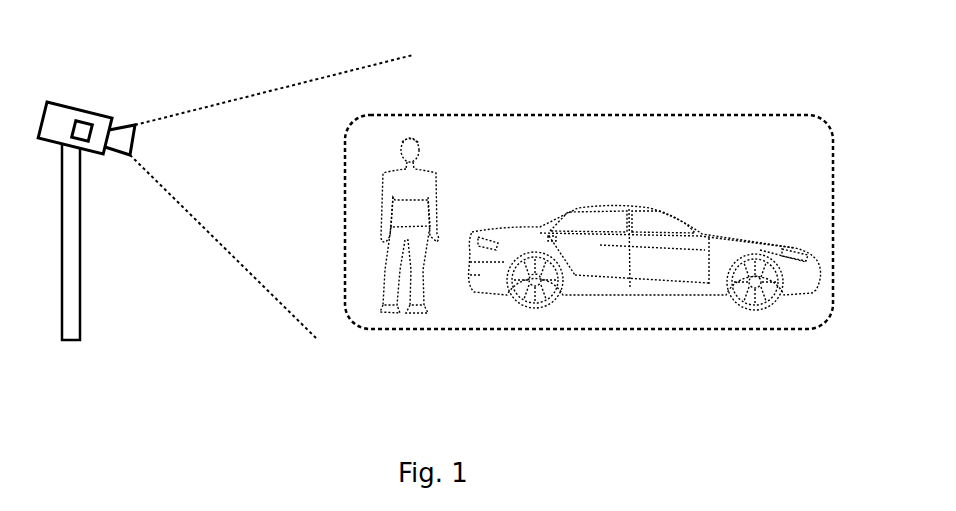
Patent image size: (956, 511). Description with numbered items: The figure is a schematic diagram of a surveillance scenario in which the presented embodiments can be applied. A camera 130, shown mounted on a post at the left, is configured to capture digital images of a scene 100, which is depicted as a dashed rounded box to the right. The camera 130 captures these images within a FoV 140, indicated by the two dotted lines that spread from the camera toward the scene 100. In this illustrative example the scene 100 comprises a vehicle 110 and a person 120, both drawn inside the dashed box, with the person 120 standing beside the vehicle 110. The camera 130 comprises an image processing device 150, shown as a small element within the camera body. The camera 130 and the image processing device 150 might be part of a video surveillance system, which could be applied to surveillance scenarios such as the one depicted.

The scene 100 is at (588, 116).
The vehicle 110 is at (633, 286).
The person 120 is at (419, 285).
The camera 130 is at (78, 111).
The FoV 140 is at (170, 202).
The image processing device 150 is at (85, 121).